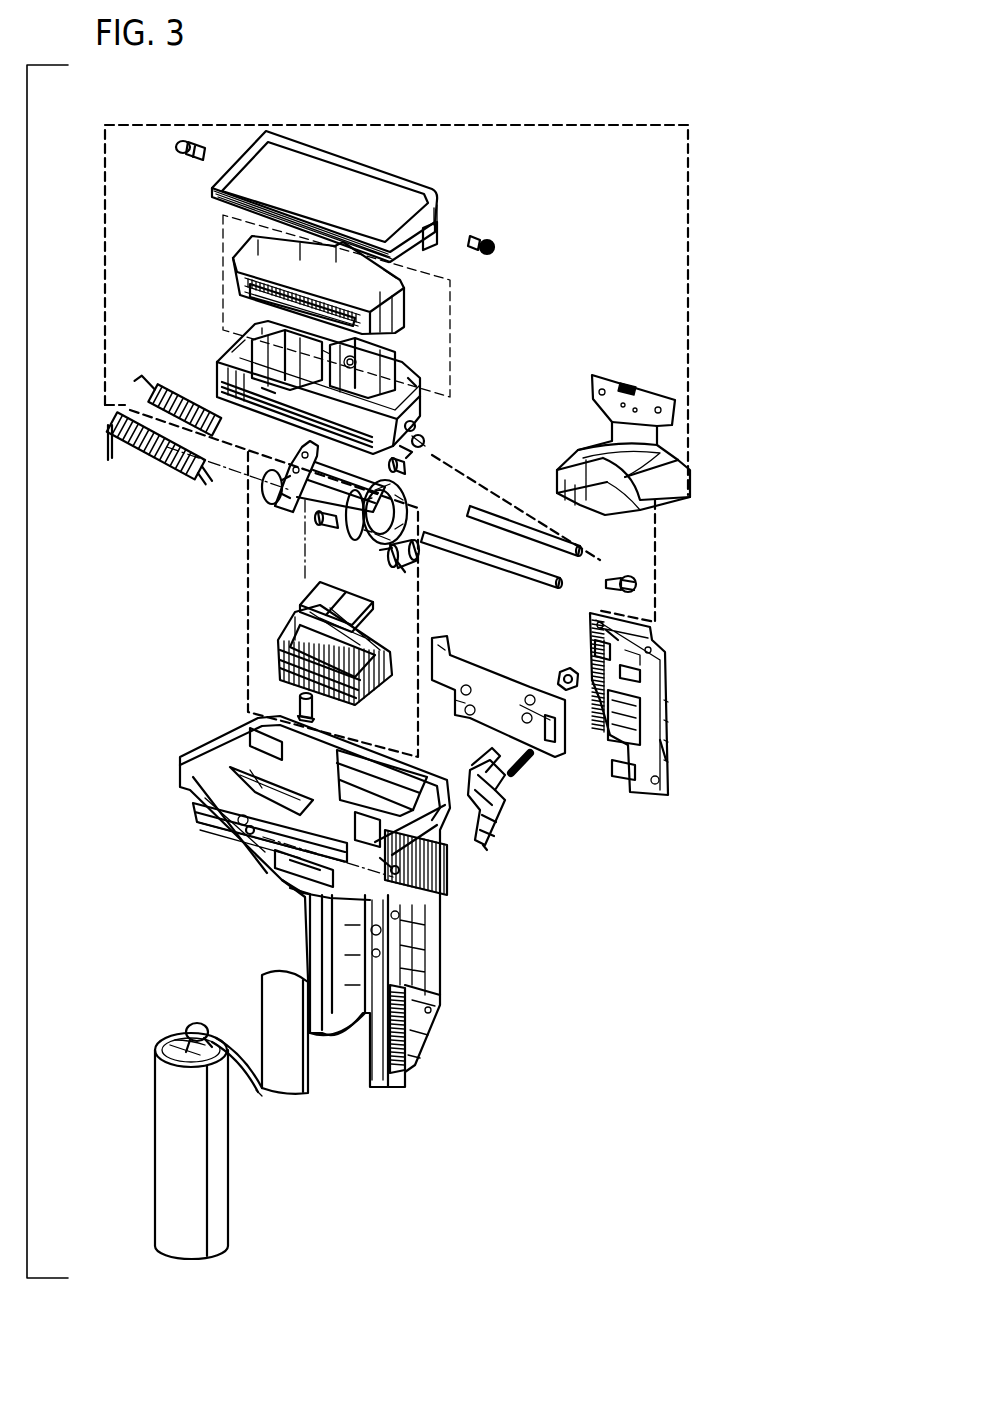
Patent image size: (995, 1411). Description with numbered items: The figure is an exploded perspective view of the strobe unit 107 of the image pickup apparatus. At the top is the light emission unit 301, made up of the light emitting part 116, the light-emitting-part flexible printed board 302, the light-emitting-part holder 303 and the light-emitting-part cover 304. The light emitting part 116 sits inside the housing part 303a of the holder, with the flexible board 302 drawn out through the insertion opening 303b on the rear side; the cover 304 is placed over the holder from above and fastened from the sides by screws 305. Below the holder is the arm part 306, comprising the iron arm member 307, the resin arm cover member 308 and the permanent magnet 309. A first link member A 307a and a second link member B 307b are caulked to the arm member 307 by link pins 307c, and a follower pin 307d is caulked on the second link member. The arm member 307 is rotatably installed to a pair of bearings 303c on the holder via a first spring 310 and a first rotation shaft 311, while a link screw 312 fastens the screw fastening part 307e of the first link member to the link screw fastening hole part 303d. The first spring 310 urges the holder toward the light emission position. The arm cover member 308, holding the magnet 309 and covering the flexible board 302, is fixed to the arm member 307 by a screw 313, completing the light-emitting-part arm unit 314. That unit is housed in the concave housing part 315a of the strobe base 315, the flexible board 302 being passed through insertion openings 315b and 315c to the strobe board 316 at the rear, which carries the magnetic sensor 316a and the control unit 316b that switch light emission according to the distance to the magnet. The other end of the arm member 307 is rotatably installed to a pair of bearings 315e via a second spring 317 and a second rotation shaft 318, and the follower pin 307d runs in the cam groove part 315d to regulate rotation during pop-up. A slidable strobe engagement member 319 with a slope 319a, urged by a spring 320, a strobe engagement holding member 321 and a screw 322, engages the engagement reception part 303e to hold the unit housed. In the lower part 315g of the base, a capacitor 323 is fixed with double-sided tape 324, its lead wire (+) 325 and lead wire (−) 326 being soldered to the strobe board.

The strobe unit 107 is at (528, 1078).
The light emitting part 116 is at (240, 265).
The light emission unit 301 is at (700, 185).
The light-emitting-part flexible printed board 302 is at (607, 375).
The light-emitting-part holder 303 is at (323, 380).
The housing part 303a is at (266, 391).
The insertion opening 303b is at (413, 383).
The bearings 303c is at (420, 441).
The link screw fastening hole part 303d is at (408, 450).
The engagement reception part 303e is at (412, 427).
The light-emitting-part cover 304 is at (212, 189).
The screws 305 is at (178, 147).
The arm part 306 is at (172, 488).
The arm member 307 is at (354, 530).
The first link member A 307a is at (392, 538).
The second link member B 307b is at (398, 553).
The link pins 307c is at (392, 560).
The follower pin 307d is at (402, 560).
The screw fastening part 307e is at (400, 490).
The arm cover member 308 is at (292, 665).
The magnet 309 is at (310, 592).
The first spring 310 is at (136, 401).
The first rotation shaft 311 is at (585, 545).
The link screw 312 is at (640, 584).
The screw 313 is at (298, 703).
The light-emitting-part arm unit 314 is at (612, 122).
The strobe base 315 is at (305, 899).
The housing part 315a is at (280, 782).
The insertion opening 315b is at (300, 872).
The insertion opening 315c is at (296, 894).
The cam groove part 315d is at (387, 865).
The bearings 315e is at (254, 832).
The lower part 315g is at (318, 948).
The strobe board 316 is at (678, 704).
The magnetic sensor 316a is at (610, 633).
The control unit 316b is at (668, 737).
The second spring 317 is at (146, 455).
The second rotation shaft 318 is at (514, 575).
The strobe engagement member 319 is at (511, 825).
The slope 319a is at (485, 847).
The spring 320 is at (527, 768).
The strobe engagement holding member 321 is at (555, 748).
The screw 322 is at (572, 700).
The capacitor 323 is at (232, 1122).
The double-sided tape 324 is at (312, 1076).
The lead wire (+) 325 is at (194, 1027).
The lead wire (−) 326 is at (222, 1068).